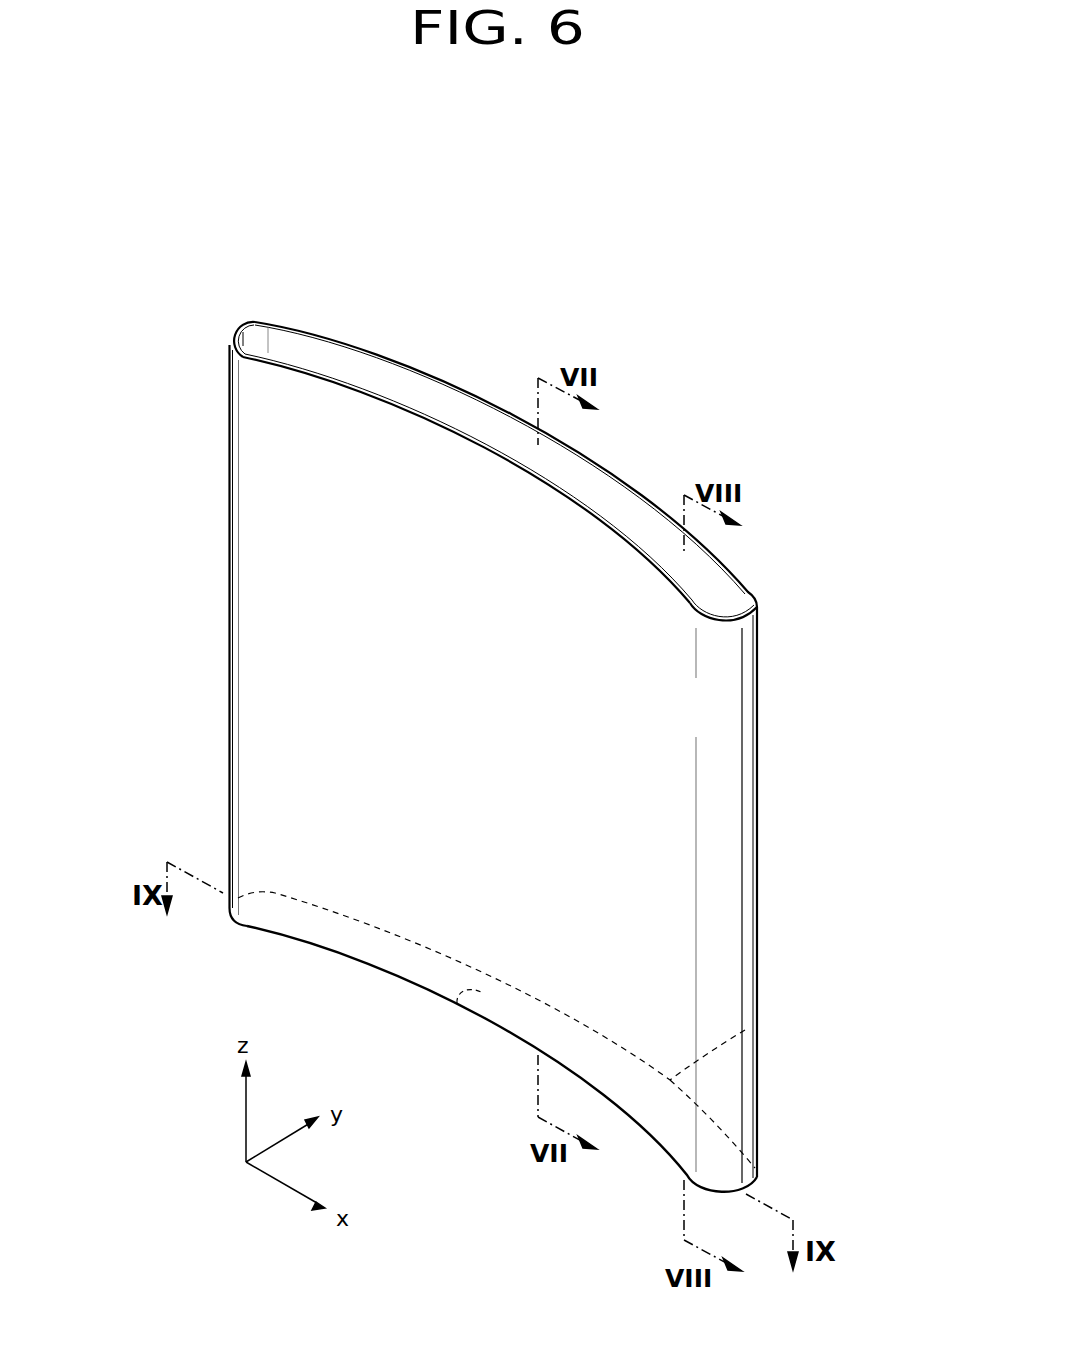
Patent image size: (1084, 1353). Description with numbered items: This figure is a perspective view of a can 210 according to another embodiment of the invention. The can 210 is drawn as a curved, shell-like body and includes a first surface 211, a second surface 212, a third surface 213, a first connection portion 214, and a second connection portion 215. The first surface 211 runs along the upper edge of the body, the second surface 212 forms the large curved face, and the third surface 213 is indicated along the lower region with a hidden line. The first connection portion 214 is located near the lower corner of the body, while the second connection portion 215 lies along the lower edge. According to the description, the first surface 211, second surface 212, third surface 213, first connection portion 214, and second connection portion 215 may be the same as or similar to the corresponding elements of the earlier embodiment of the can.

The can 210 is at (729, 281).
The first surface 211 is at (435, 403).
The second surface 212 is at (665, 840).
The third surface 213 is at (457, 1003).
The first connection portion 214 is at (745, 1030).
The second connection portion 215 is at (353, 960).